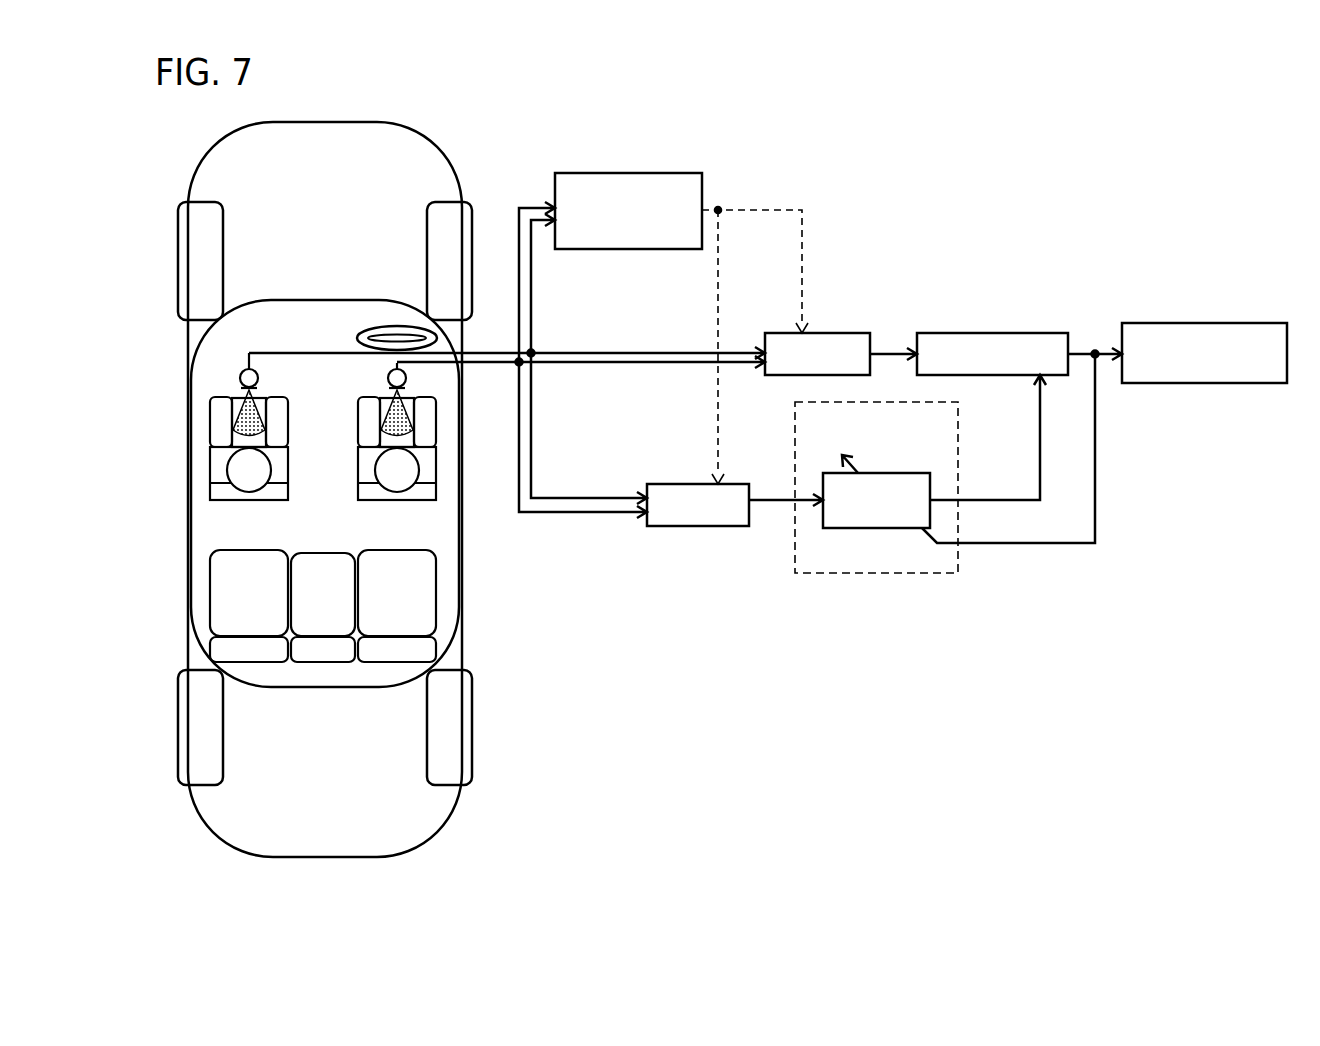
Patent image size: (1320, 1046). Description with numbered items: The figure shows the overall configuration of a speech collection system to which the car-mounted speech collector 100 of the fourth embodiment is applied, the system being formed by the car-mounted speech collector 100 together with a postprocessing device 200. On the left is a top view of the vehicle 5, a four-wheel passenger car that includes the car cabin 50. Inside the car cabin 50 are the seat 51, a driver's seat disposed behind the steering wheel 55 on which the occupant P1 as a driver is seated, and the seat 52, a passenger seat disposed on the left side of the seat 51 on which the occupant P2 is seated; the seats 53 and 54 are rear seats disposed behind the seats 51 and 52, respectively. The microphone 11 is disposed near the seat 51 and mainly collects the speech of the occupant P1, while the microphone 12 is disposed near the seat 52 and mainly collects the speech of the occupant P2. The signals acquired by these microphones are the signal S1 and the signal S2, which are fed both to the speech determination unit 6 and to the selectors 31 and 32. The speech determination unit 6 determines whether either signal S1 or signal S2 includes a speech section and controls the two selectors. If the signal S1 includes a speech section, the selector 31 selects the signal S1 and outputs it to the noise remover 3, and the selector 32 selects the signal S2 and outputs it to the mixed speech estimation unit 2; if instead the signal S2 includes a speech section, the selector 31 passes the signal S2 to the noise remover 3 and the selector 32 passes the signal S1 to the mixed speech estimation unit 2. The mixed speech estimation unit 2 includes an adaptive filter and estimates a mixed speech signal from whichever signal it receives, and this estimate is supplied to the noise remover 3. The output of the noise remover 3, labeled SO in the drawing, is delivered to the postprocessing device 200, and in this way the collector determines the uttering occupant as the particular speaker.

The vehicle 5 is at (360, 122).
The car cabin 50 is at (305, 300).
The steering wheel 55 is at (398, 327).
The second microphone 12 is at (240, 375).
The first microphone 11 is at (406, 378).
The second occupant P2 is at (252, 458).
The first occupant P1 is at (383, 472).
The passenger seat 52 is at (271, 501).
The driver's seat 51 is at (407, 501).
The rear seat 54 is at (249, 662).
The rear seat 53 is at (397, 662).
The car-mounted speech collector 100 is at (730, 128).
The speech determination unit 6 is at (645, 173).
The selector 31 is at (830, 333).
The selector 32 is at (733, 484).
The noise remover 3 is at (1022, 333).
The postprocessing device 200 is at (1217, 323).
The mixed speech estimation unit 2 is at (960, 481).
The signal S1 is at (497, 366).
The signal S2 is at (507, 359).
The output signal SO is at (1097, 487).